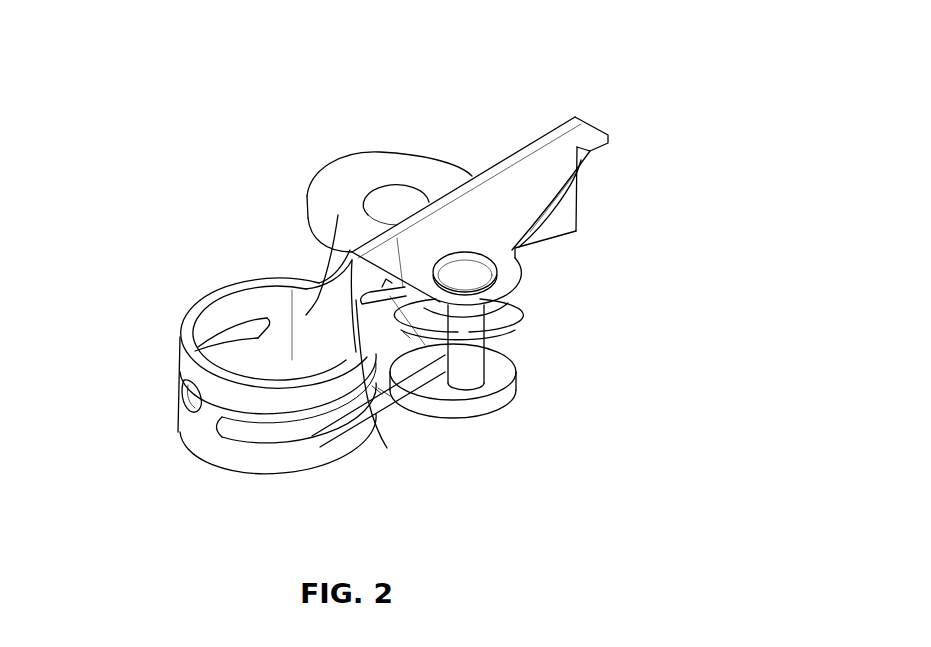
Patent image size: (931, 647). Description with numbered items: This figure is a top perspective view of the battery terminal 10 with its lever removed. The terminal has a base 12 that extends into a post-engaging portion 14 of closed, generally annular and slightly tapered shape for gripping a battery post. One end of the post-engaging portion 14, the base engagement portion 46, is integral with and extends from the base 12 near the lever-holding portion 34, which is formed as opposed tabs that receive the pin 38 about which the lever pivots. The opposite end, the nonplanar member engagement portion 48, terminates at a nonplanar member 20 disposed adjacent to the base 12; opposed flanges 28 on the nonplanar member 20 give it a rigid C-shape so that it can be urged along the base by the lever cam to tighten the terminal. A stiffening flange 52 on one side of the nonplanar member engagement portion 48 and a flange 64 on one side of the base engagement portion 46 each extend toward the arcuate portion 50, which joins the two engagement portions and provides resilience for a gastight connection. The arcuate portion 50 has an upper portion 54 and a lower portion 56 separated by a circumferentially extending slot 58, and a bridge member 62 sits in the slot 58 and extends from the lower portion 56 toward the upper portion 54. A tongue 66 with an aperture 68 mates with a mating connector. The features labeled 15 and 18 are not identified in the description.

The battery terminal 10 is at (690, 85).
The base 12 is at (563, 207).
The post-engaging portion 14 is at (282, 490).
The inner channel of ring 15 is at (214, 316).
The linkage bracket 18 is at (350, 250).
The nonplanar member 20 is at (440, 359).
The opposed flanges 28 is at (403, 333).
The lever-holding portion 34 is at (465, 203).
The pin 38 is at (478, 270).
The base engagement portion 46 is at (320, 287).
The nonplanar member engagement portion 48 is at (347, 420).
The arcuate portion 50 is at (203, 438).
The flange 52 is at (378, 388).
The upper portion 54 is at (190, 367).
The lower portion 56 is at (180, 430).
The circumferentially extending slot 58 is at (247, 425).
The bridge member 62 is at (183, 403).
The flange 64 is at (380, 390).
The tongue 66 is at (342, 167).
The aperture 68 is at (403, 187).